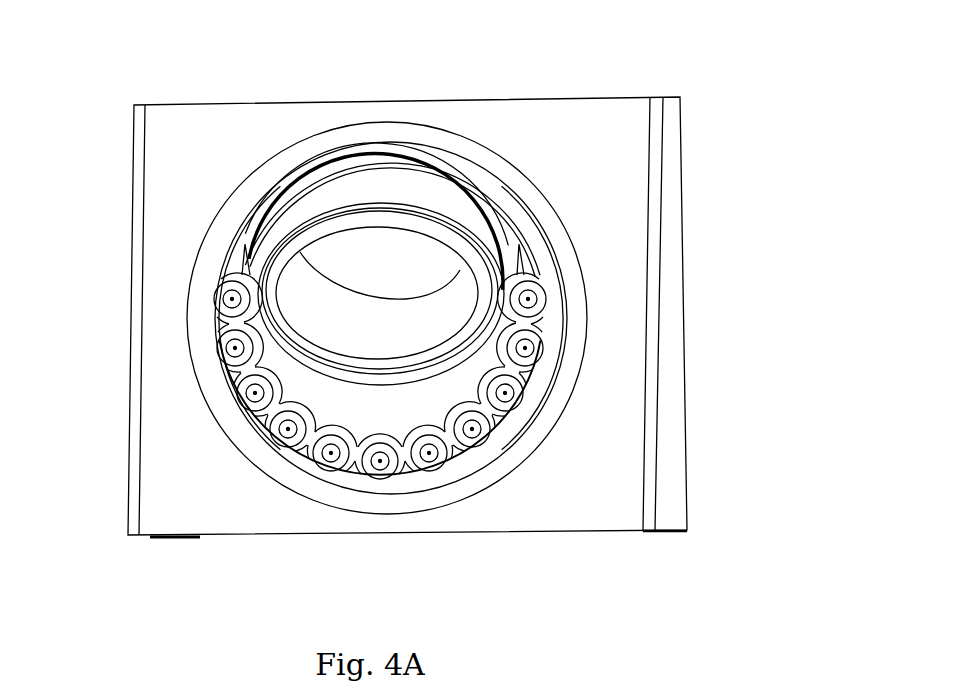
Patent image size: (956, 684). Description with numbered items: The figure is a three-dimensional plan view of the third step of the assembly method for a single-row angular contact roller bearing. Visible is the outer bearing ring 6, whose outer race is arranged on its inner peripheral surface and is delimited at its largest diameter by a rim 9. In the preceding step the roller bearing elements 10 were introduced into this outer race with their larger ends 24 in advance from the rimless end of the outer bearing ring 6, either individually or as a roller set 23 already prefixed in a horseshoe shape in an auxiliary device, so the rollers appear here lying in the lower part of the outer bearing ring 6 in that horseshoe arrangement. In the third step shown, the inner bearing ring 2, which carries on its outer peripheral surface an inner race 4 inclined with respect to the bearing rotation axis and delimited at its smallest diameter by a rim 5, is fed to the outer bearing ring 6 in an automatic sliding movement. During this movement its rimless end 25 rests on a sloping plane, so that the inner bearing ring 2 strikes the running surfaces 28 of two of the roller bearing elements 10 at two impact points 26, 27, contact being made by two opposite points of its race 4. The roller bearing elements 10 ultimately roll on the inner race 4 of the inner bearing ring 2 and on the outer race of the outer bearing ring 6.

The inner bearing ring 2 is at (393, 175).
The inner race 4 is at (333, 192).
The rim 5 is at (293, 176).
The outer bearing ring 6 is at (489, 122).
The rim 9 is at (240, 247).
The roller bearing elements 10 is at (334, 456).
The roller set 23 is at (393, 490).
The larger ends 24 is at (440, 433).
The rimless end 25 is at (475, 280).
The impact point 26 is at (218, 299).
The impact point 27 is at (537, 283).
The running surfaces 28 is at (412, 460).